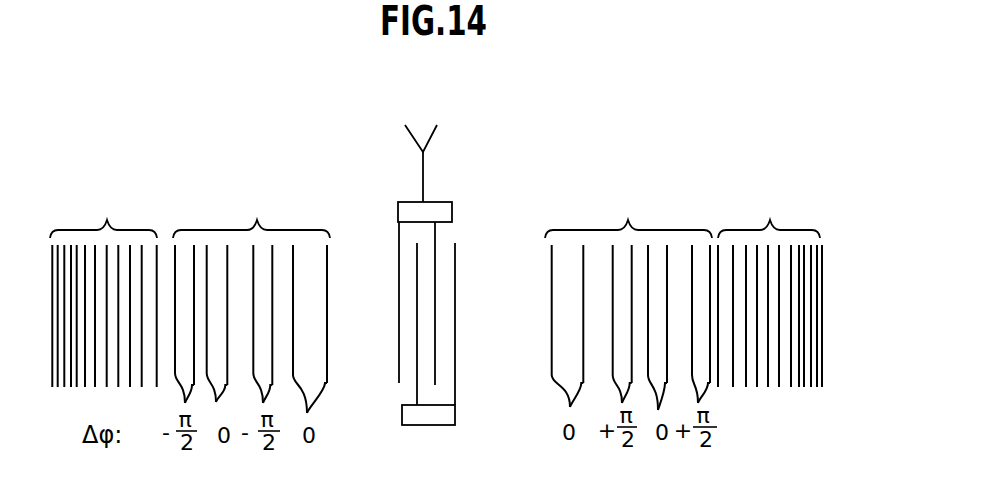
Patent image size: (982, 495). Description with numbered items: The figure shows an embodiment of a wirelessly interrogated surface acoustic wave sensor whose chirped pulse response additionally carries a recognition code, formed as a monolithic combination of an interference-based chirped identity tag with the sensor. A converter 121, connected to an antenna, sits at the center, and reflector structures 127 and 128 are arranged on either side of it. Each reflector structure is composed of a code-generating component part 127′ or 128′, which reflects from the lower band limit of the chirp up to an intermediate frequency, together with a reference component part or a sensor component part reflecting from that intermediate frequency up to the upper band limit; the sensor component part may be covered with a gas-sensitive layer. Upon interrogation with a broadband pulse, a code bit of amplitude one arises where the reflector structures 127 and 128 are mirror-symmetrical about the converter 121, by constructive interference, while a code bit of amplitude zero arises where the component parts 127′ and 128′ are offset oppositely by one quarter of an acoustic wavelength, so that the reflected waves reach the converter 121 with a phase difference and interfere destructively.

The reflector structure 127 is at (186, 202).
The code-generating component part 127′ is at (251, 305).
The reflector structure 128 is at (700, 203).
The code-generating component part 128′ is at (628, 301).
The converter 121 is at (443, 222).